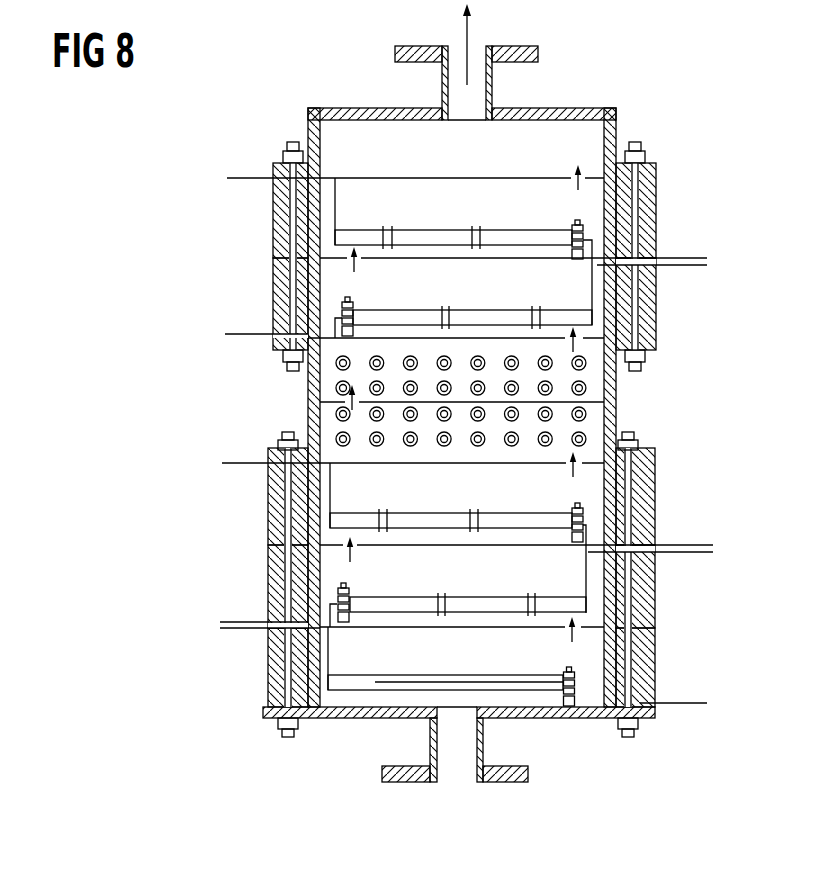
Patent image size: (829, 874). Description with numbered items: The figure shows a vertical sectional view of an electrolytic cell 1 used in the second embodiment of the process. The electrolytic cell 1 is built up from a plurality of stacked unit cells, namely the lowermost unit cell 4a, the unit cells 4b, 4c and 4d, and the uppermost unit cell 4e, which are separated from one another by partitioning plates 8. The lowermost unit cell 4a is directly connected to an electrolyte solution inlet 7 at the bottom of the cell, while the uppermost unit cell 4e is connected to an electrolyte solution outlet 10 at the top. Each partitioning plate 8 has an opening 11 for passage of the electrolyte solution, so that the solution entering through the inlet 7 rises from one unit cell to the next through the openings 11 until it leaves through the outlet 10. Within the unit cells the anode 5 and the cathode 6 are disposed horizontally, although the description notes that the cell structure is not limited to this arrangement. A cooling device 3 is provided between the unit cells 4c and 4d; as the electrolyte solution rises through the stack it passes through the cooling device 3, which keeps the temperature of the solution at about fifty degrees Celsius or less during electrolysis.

The electrolytic cell 1 is at (343, 722).
The cooling device 3 is at (588, 392).
The lowermost unit cell 4a is at (262, 680).
The unit cell 4b is at (262, 567).
The unit cell 4c is at (262, 493).
The unit cell 4d is at (266, 285).
The uppermost unit cell 4e is at (266, 215).
The anode 5 is at (246, 178).
The cathode 6 is at (242, 340).
The electrolyte solution inlet 7 is at (528, 773).
The partitioning plate 8 is at (432, 633).
The electrolyte solution outlet 10 is at (547, 57).
The opening 11 is at (562, 632).